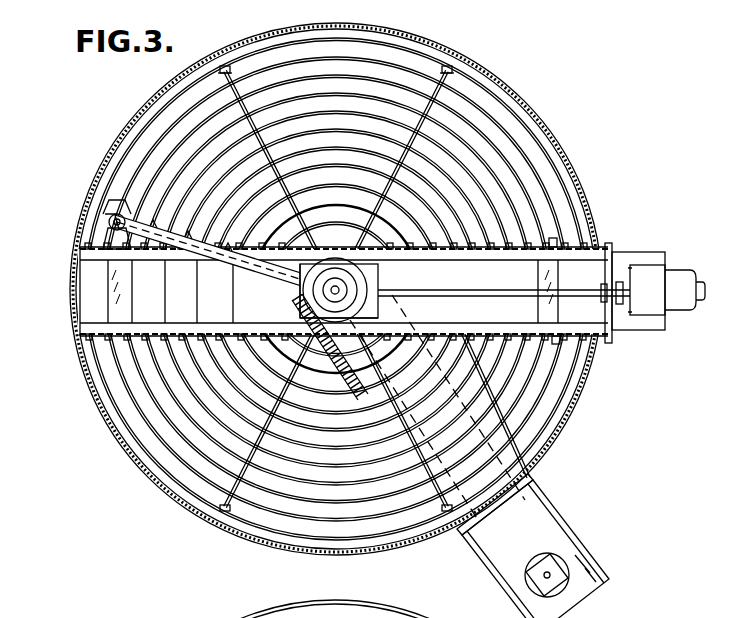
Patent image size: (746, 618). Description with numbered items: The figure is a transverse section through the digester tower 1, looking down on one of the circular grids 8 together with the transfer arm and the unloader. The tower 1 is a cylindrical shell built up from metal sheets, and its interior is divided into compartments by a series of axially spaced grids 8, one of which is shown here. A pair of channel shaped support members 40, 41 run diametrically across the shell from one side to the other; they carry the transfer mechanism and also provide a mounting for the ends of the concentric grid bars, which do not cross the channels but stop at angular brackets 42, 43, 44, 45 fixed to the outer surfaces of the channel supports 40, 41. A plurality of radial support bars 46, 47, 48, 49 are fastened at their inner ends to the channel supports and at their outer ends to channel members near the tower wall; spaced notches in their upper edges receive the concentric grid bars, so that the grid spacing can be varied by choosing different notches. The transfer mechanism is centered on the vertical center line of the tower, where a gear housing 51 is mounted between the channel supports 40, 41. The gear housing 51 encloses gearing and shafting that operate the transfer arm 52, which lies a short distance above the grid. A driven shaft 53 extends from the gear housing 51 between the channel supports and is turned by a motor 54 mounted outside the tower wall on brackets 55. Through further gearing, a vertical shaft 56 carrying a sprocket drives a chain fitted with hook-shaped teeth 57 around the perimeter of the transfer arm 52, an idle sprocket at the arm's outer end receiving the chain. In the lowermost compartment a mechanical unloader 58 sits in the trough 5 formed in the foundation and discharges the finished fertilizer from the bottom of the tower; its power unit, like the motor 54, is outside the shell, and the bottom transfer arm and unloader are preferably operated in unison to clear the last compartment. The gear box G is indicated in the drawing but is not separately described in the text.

The digester tower 1 is at (95, 402).
The trough 5 is at (492, 456).
The grids 8 is at (157, 443).
The channel shaped support member 40 is at (98, 317).
The channel shaped support member 41 is at (98, 262).
The angular bracket 42 is at (110, 347).
The angular bracket 43 is at (103, 247).
The angular bracket 44 is at (557, 343).
The angular bracket 45 is at (553, 237).
The radial support bar 46 is at (225, 488).
The radial support bar 47 is at (423, 477).
The radial support bar 48 is at (447, 97).
The radial support bar 49 is at (237, 68).
The gear housing 51 is at (336, 262).
The transfer arm 52 is at (187, 245).
The driven shaft 53 is at (477, 288).
The motor 54 is at (680, 272).
The brackets 55 is at (653, 327).
The vertical shaft 56 is at (307, 303).
The hook-shaped teeth 57 is at (88, 200).
The mechanical unloader 58 is at (528, 510).
The gear box G is at (583, 530).